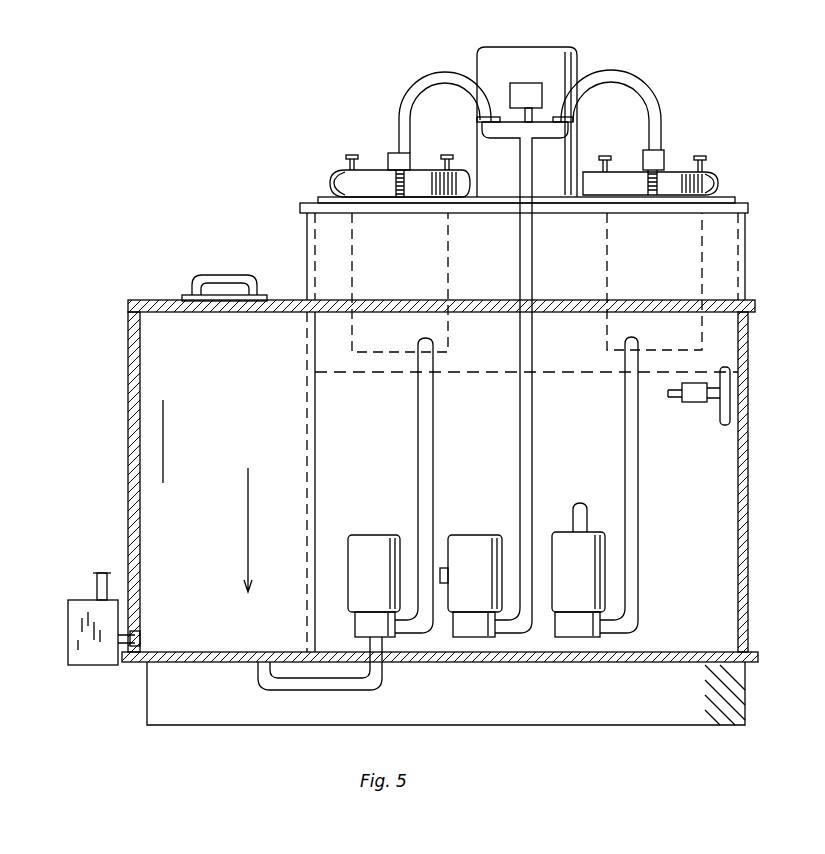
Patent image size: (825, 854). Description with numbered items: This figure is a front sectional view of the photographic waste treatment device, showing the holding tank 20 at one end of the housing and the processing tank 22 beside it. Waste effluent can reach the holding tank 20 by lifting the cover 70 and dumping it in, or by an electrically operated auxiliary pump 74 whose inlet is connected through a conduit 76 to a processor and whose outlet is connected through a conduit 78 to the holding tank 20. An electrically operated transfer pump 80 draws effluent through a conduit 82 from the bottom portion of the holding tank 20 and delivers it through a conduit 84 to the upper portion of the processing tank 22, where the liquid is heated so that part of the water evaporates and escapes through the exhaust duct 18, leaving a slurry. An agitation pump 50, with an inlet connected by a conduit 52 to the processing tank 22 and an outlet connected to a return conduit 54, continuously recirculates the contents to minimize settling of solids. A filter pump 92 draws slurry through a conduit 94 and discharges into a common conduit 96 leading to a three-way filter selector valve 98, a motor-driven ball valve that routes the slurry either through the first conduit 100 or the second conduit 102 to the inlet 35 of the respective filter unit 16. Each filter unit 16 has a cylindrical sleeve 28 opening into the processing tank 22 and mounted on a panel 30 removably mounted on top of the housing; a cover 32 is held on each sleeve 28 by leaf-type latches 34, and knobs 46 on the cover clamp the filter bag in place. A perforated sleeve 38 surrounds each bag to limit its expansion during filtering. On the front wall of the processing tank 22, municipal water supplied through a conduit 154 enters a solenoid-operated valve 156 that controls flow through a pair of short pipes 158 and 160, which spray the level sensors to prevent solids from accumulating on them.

The filter unit 16 is at (747, 129).
The exhaust duct 18 is at (557, 68).
The holding tank 20 is at (170, 447).
The processing tank 22 is at (700, 503).
The cylindrical sleeve 28 is at (345, 190).
The panel 30 is at (735, 200).
The cover 32 is at (420, 176).
The leaf-type latch 34 is at (334, 186).
The inlet 35 is at (396, 153).
The perforated sleeve 38 is at (352, 230).
The knob 46 is at (351, 155).
The agitation pump 50 is at (575, 562).
The conduit 52 is at (581, 503).
The return conduit 54 is at (625, 420).
The cover 70 is at (183, 295).
The auxiliary pump 74 is at (85, 652).
The conduit 76 is at (95, 578).
The conduit 78 is at (145, 638).
The transfer pump 80 is at (372, 542).
The conduit 82 is at (328, 682).
The conduit 84 is at (418, 433).
The filter pump 92 is at (475, 540).
The conduit 94 is at (448, 575).
The common conduit 96 is at (533, 237).
The filter selector valve 98 is at (522, 86).
The first conduit 100 is at (445, 76).
The second conduit 102 is at (642, 80).
The conduit 154 is at (668, 392).
The solenoid-operated valve 156 is at (695, 395).
The short pipe 158 is at (725, 368).
The short pipe 160 is at (718, 425).